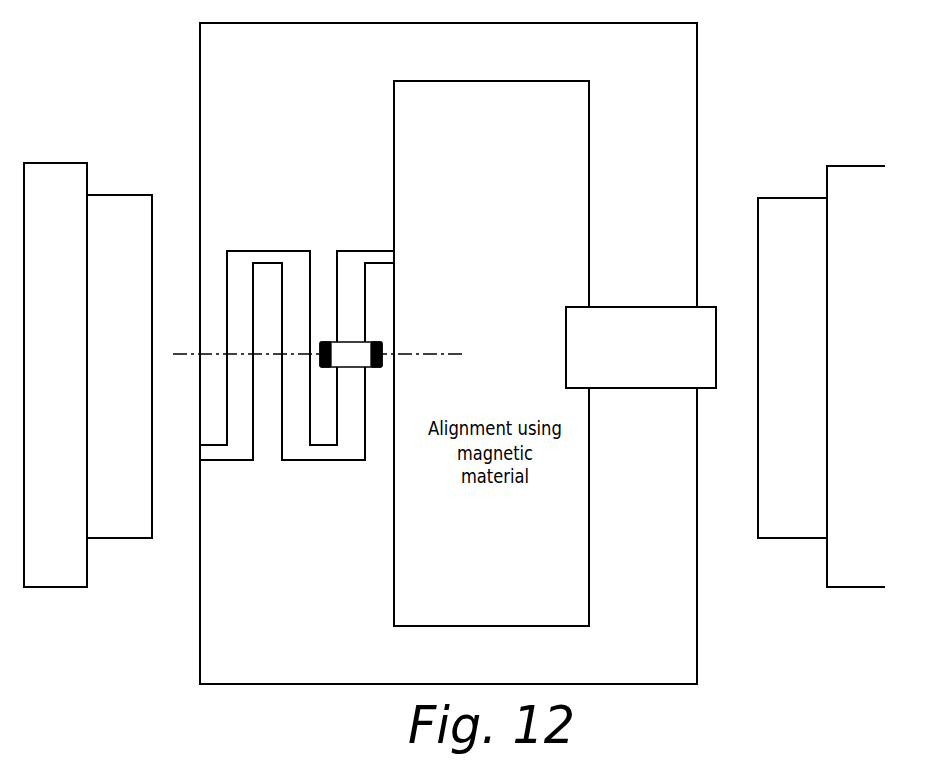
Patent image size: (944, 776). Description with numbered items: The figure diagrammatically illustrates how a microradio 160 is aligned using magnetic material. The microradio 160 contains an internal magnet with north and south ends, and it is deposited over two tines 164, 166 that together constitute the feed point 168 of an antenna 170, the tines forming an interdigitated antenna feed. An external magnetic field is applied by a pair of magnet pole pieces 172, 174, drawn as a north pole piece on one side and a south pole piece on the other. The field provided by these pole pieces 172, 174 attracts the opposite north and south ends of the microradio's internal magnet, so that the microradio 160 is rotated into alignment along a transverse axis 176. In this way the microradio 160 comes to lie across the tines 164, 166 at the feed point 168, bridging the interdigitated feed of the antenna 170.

The microradio 160 is at (380, 330).
The tine 164 is at (383, 340).
The tine 166 is at (327, 272).
The feed point 168 is at (417, 245).
The antenna 170 is at (658, 121).
The magnet pole piece 172 is at (88, 375).
The magnet pole piece 174 is at (821, 376).
The transverse axis 176 is at (440, 353).